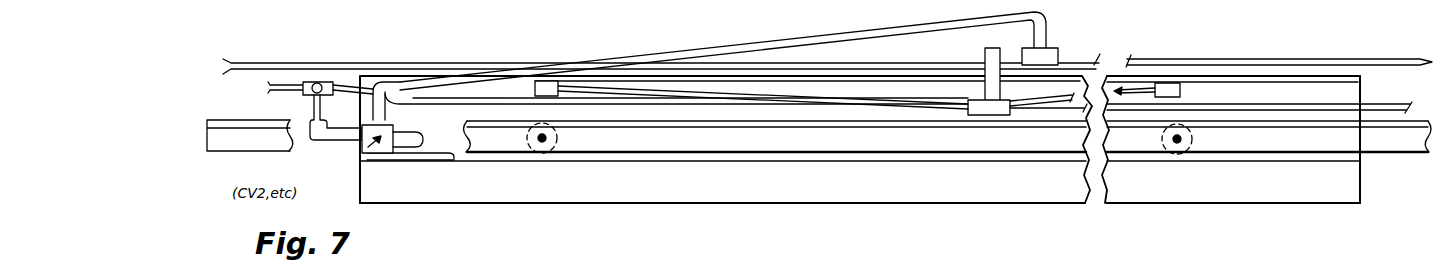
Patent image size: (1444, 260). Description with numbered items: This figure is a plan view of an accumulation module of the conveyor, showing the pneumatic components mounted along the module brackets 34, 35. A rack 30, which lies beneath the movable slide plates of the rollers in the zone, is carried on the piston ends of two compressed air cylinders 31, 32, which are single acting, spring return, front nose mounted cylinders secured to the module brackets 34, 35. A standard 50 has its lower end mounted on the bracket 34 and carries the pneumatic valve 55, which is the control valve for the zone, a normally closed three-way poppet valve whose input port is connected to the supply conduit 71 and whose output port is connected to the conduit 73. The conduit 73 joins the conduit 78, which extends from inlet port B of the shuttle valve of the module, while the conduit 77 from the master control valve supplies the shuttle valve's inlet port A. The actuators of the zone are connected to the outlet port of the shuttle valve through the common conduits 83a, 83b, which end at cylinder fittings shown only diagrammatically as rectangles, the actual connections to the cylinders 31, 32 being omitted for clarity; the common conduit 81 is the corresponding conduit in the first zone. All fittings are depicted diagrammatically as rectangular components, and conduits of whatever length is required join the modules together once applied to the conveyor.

The rack 30 is at (892, 143).
The cylinder 31 is at (557, 141).
The cylinder 32 is at (1192, 142).
The module bracket 34 is at (1302, 193).
The module bracket 35 is at (1306, 193).
The standard 50 is at (452, 155).
The pneumatic valve 55 is at (363, 143).
The supply conduit 71 is at (275, 87).
The conduit 73 is at (794, 40).
The conduit 77 is at (942, 56).
The conduit 78 is at (1128, 59).
The common conduit 81 is at (992, 49).
The common conduit 83a is at (803, 100).
The common conduit 83b is at (1048, 109).